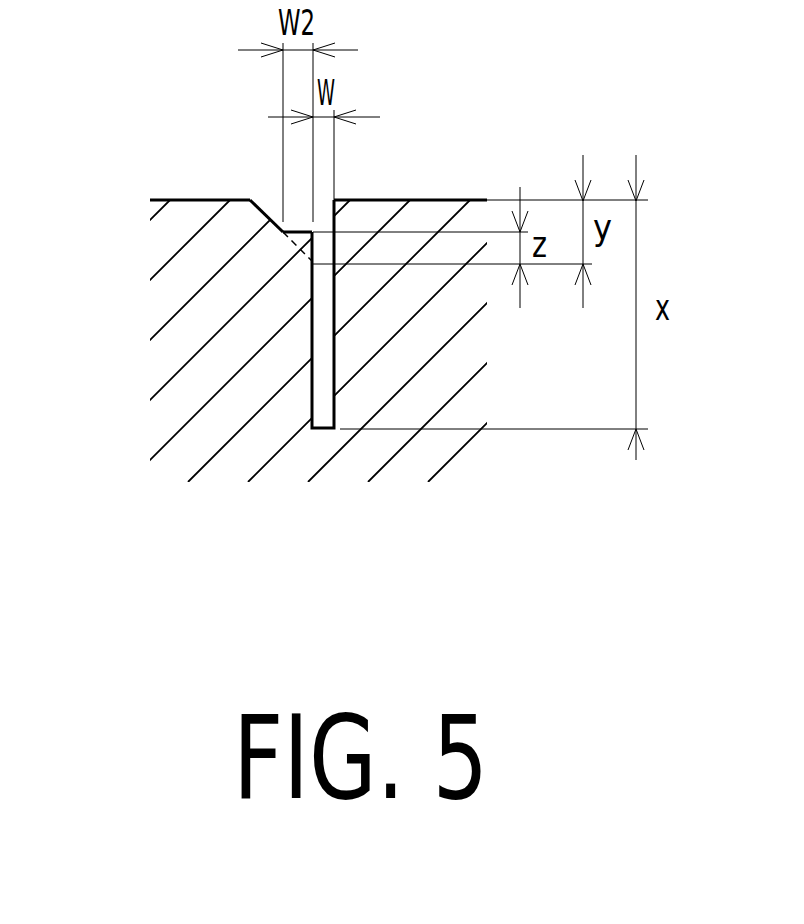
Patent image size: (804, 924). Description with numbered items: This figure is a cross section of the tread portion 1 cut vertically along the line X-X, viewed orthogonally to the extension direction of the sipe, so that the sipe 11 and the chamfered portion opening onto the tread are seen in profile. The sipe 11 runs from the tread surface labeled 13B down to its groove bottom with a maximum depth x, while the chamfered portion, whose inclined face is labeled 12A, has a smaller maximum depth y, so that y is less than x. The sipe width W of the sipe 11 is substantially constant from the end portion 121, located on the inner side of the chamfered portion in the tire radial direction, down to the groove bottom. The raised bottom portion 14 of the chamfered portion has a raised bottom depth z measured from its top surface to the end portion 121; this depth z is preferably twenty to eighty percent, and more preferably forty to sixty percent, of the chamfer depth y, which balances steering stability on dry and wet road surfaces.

The tread portion 1 is at (459, 198).
The sipe 11 is at (323, 412).
The chamfer (inclined surface) 12A is at (273, 200).
The top surface 13B is at (363, 200).
The raised bottom portion 14 is at (297, 243).
The end portion 121 is at (307, 262).